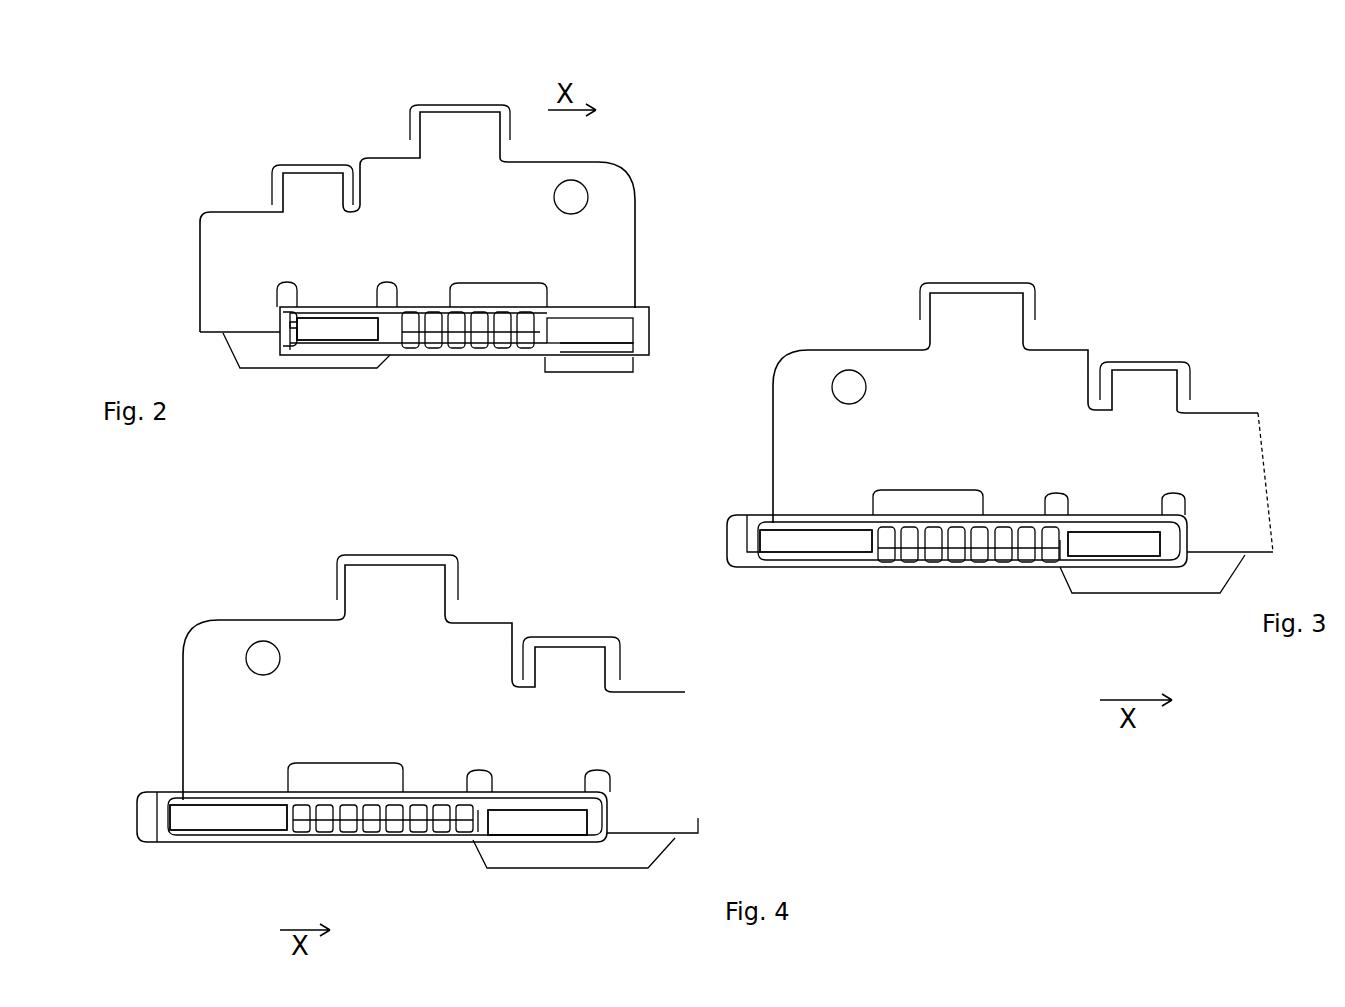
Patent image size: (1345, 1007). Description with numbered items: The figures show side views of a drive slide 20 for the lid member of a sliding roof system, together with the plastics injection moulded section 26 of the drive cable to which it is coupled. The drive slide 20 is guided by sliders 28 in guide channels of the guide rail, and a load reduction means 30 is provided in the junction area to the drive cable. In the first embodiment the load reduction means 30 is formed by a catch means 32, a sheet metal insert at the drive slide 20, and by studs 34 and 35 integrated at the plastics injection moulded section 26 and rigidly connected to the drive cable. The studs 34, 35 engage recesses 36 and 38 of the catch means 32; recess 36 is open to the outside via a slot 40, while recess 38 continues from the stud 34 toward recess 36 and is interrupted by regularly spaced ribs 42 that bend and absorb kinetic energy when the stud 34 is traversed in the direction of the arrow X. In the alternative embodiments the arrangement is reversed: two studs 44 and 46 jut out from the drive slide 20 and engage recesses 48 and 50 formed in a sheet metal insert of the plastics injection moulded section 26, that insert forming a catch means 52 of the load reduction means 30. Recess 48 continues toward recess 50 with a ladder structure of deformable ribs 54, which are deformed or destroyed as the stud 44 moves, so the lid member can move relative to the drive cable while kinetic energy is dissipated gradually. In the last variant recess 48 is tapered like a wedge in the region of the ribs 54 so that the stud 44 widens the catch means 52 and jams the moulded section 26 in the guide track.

In FIG. 2, the drive slide 20 is at (128, 92).
In FIG. 3, the drive slide 20 is at (1190, 253).
In FIG. 4, the drive slide 20 is at (146, 584).
In FIG. 4, the plastics injection moulded section 26 is at (142, 805).
In FIG. 2, the sliders 28 is at (285, 170).
In FIG. 3, the sliders 28 is at (1010, 290).
In FIG. 4, the sliders 28 is at (453, 568).
In FIG. 2, the load reduction means 30 is at (643, 294).
In FIG. 3, the load reduction means 30 is at (738, 580).
In FIG. 4, the load reduction means 30 is at (138, 840).
In FIG. 2, the catch means 32 is at (400, 340).
In FIG. 2, the stud 34 is at (318, 333).
In FIG. 2, the stud 35 is at (620, 332).
In FIG. 2, the recess 36 is at (352, 343).
In FIG. 3, the recess 36 is at (728, 535).
In FIG. 2, the recess 38 is at (593, 345).
In FIG. 2, the slot 40 is at (283, 335).
In FIG. 2, the ribs 42 is at (425, 348).
In FIG. 3, the stud 44 is at (800, 545).
In FIG. 4, the stud 44 is at (207, 815).
In FIG. 3, the stud 46 is at (1100, 548).
In FIG. 4, the stud 46 is at (522, 828).
In FIG. 3, the recess 48 is at (833, 560).
In FIG. 4, the recess 48 is at (238, 833).
In FIG. 3, the recess 50 is at (1132, 560).
In FIG. 4, the recess 50 is at (548, 836).
In FIG. 3, the catch means 52 is at (1060, 560).
In FIG. 4, the catch means 52 is at (478, 830).
In FIG. 3, the ribs 54 is at (886, 562).
In FIG. 4, the ribs 54 is at (301, 832).